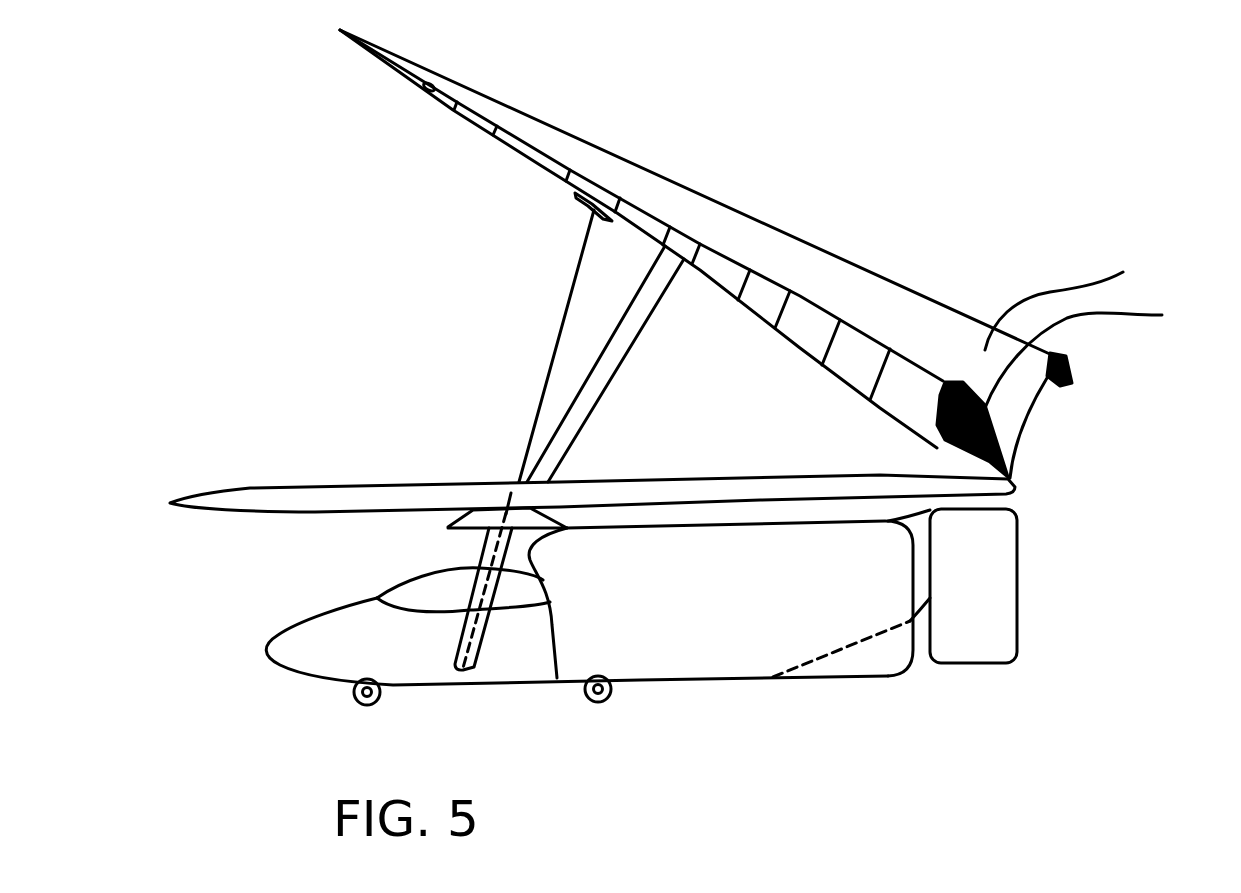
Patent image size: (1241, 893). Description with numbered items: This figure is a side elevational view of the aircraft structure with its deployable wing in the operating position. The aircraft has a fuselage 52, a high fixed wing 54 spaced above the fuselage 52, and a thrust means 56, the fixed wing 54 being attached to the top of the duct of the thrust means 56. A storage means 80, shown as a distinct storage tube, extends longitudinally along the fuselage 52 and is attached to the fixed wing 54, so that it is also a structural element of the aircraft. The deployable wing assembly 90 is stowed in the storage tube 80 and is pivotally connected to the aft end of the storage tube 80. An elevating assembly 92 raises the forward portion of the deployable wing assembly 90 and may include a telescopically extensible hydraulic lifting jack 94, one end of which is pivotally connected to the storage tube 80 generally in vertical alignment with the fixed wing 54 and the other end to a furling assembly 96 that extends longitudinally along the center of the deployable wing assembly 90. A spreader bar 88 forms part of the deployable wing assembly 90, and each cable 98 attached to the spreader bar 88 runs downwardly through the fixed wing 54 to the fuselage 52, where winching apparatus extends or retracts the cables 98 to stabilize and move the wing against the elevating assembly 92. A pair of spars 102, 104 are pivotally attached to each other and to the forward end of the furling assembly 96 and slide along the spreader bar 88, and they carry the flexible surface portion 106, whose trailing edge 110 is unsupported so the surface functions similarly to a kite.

The fuselage 52 is at (415, 663).
The high fixed wing 54 is at (458, 527).
The thrust means 56 is at (750, 643).
The storage means 80 is at (331, 487).
The spreader bar 88 is at (590, 202).
The deployable wing assembly 90 is at (690, 205).
The elevating assembly 92 is at (618, 386).
The hydraulic lifting jack 94 is at (653, 314).
The furling assembly 96 is at (1003, 448).
The cable 98 is at (558, 335).
The spar 102 is at (1057, 388).
The spar 104 is at (833, 373).
The flexible surface portion 106 is at (1091, 300).
The trailing edge 110 is at (1104, 354).